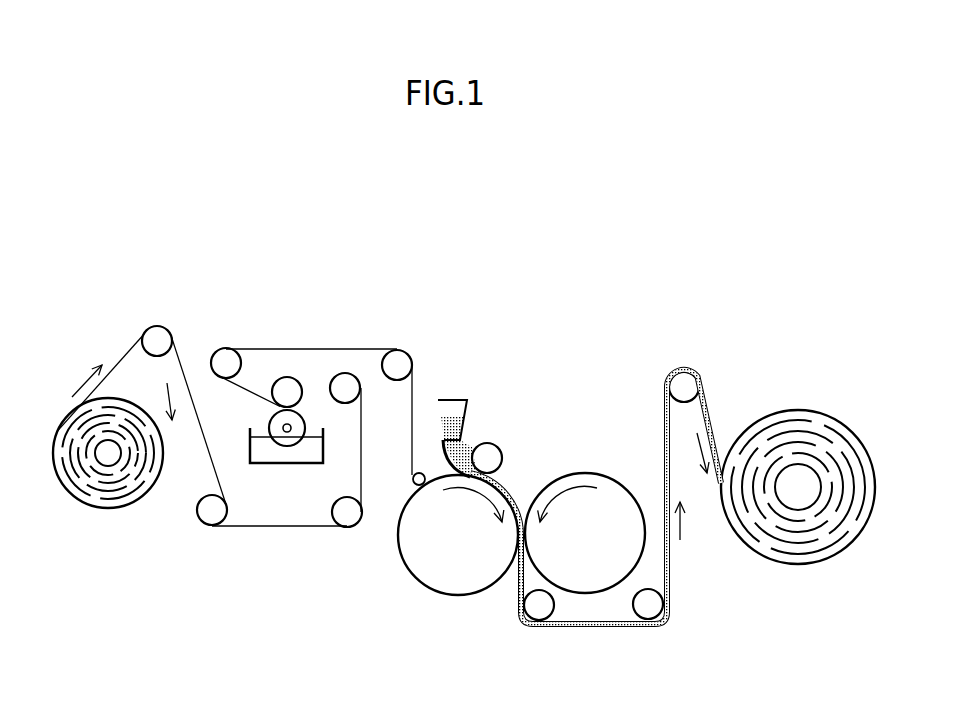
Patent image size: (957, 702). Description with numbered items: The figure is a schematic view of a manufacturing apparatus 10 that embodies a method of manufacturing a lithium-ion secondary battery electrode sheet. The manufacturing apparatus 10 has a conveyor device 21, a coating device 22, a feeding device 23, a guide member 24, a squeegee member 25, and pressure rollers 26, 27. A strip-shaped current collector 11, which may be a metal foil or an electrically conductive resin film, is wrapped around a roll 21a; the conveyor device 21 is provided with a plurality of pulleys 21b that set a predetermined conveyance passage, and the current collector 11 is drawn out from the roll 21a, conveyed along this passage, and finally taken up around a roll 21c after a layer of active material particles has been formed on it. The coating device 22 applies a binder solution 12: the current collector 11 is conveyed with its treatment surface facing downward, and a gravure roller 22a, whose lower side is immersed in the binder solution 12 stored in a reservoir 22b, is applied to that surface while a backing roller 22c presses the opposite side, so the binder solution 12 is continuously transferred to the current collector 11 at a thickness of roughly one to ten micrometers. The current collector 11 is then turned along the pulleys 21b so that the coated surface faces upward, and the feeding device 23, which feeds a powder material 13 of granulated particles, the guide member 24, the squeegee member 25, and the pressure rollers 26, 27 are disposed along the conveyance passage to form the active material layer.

The manufacturing apparatus 10 is at (153, 241).
The current collector 11 is at (668, 588).
The binder solution 12 is at (257, 448).
The powder material 13 is at (521, 500).
The conveyor device 21 is at (412, 304).
The roll 21a is at (77, 502).
The pulleys 21b is at (150, 353).
The roll 21c is at (797, 566).
The coating device 22 is at (283, 474).
The gravure roller 22a is at (268, 422).
The reservoir 22b is at (317, 467).
The backing roller 22c is at (284, 377).
The feeding device 23 is at (457, 399).
The guide member 24 is at (443, 448).
The squeegee member 25 is at (496, 444).
The pressure roller 26 is at (435, 594).
The pressure roller 27 is at (597, 473).